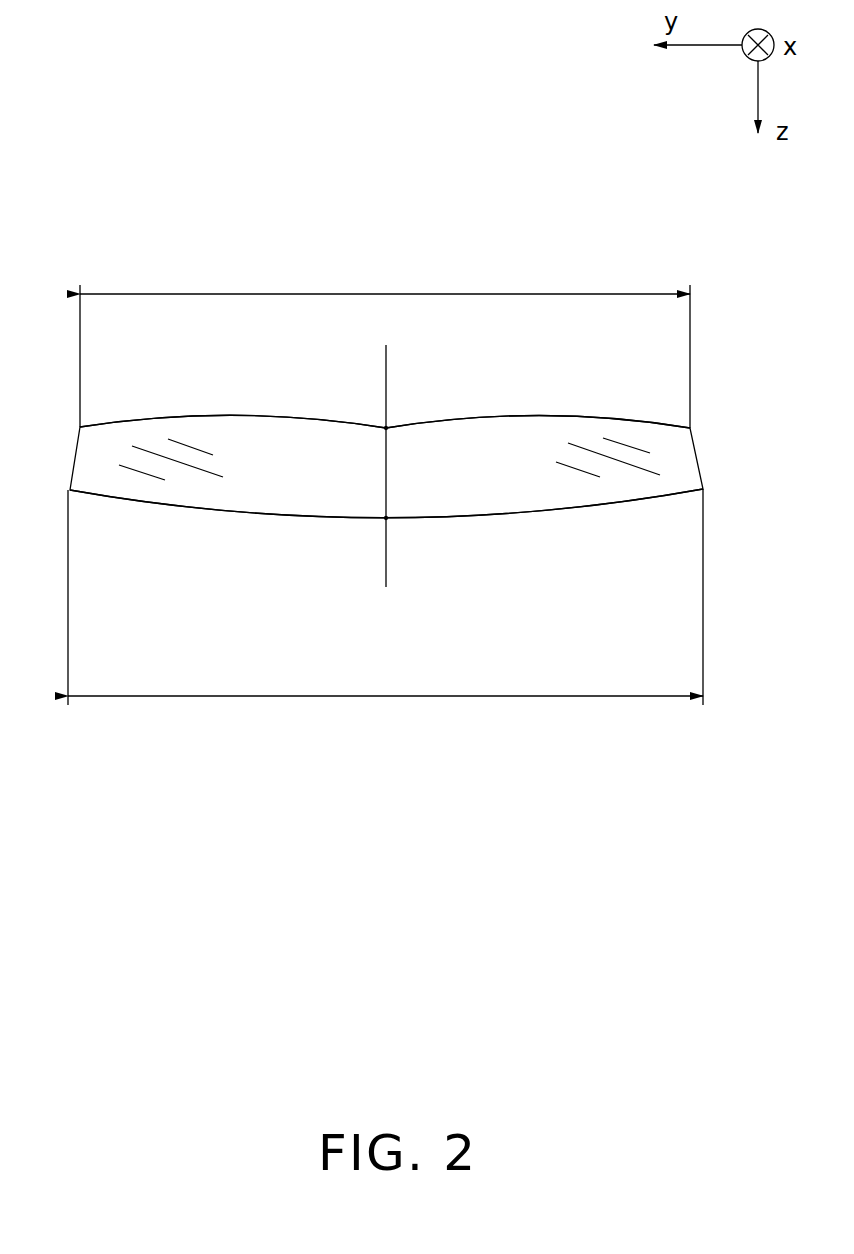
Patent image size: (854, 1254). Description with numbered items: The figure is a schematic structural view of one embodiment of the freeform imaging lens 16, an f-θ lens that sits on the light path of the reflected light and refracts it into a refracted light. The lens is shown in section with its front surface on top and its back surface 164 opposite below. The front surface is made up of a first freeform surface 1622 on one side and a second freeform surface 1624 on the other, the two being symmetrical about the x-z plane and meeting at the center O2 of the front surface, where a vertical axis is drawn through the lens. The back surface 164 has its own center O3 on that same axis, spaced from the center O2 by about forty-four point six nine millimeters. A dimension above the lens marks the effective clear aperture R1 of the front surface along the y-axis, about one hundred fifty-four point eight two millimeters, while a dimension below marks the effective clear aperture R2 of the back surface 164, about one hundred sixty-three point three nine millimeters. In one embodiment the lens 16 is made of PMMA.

The freeform imaging lens 16 is at (385, 180).
The first freeform surface 1622 is at (225, 413).
The second freeform surface 1624 is at (487, 415).
The back surface 164 is at (470, 518).
The center of the front surface O2 is at (386, 427).
The center of the back surface O3 is at (386, 518).
The effective clear aperture of the front surface R1 is at (385, 347).
The effective clear aperture of the back surface R2 is at (385, 597).